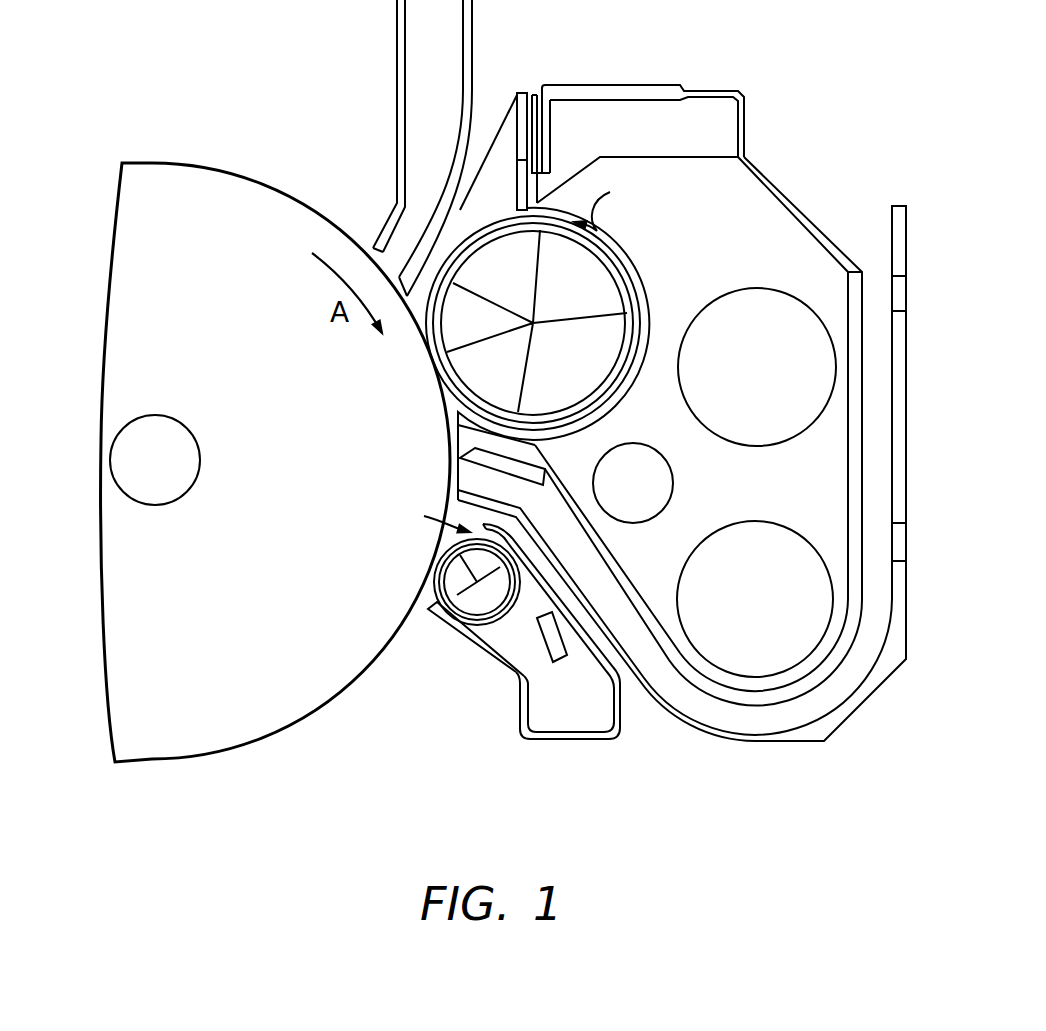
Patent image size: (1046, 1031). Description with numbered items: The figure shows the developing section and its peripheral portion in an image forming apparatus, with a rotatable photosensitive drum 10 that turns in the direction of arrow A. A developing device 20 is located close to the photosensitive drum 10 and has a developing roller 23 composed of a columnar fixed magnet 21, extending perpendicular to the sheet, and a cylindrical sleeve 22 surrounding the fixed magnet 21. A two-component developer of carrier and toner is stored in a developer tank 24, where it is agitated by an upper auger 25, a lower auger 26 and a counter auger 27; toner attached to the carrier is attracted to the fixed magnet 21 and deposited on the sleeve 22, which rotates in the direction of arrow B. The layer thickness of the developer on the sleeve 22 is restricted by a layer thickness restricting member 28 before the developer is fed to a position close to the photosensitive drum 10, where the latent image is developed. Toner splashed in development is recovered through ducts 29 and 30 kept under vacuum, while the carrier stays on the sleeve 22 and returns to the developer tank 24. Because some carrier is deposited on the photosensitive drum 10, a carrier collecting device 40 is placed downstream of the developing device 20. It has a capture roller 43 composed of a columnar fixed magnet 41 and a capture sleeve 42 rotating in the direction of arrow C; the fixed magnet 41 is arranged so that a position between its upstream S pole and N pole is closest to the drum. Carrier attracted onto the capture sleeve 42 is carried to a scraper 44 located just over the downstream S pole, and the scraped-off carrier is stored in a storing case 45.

The photosensitive drum 10 is at (277, 187).
The developing device 20 is at (806, 128).
The fixed magnet 21 is at (610, 302).
The sleeve 22 is at (633, 279).
The developing roller 23 is at (632, 254).
The developer tank 24 is at (783, 230).
The upper auger 25 is at (766, 292).
The lower auger 26 is at (678, 566).
The counter auger 27 is at (668, 491).
The layer thickness restricting member 28 is at (500, 167).
The duct 29 is at (420, 77).
The duct 30 is at (707, 705).
The carrier collecting device 40 is at (486, 685).
The fixed magnet 41 is at (462, 598).
The capture sleeve 42 is at (430, 604).
The capture roller 43 is at (477, 630).
The scraper 44 is at (530, 614).
The storing case 45 is at (575, 722).